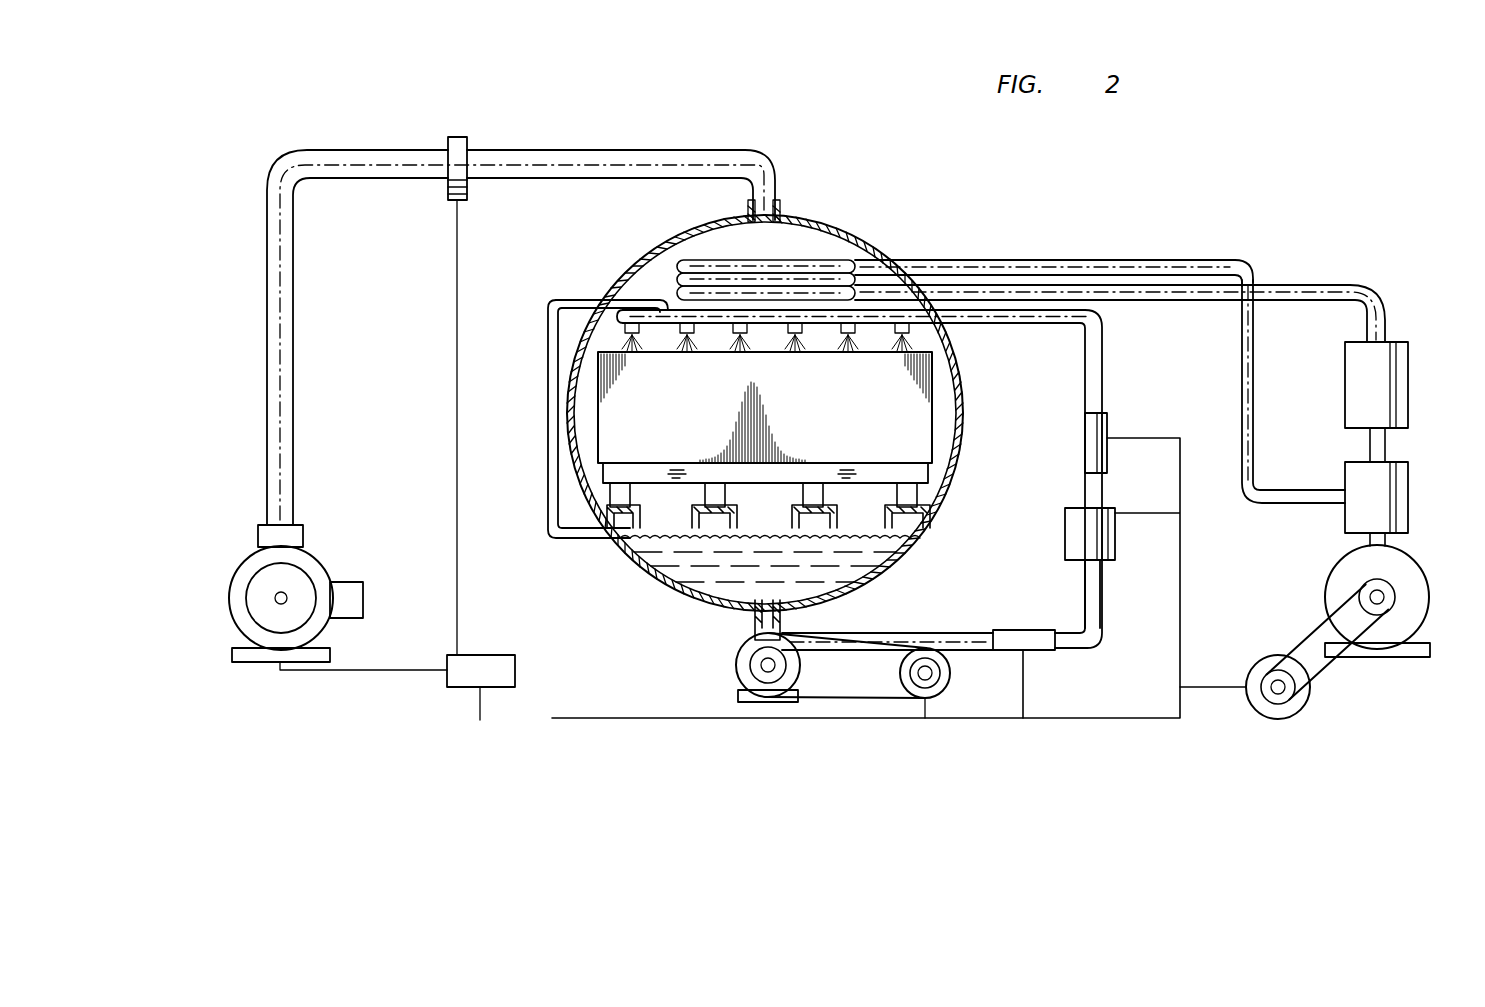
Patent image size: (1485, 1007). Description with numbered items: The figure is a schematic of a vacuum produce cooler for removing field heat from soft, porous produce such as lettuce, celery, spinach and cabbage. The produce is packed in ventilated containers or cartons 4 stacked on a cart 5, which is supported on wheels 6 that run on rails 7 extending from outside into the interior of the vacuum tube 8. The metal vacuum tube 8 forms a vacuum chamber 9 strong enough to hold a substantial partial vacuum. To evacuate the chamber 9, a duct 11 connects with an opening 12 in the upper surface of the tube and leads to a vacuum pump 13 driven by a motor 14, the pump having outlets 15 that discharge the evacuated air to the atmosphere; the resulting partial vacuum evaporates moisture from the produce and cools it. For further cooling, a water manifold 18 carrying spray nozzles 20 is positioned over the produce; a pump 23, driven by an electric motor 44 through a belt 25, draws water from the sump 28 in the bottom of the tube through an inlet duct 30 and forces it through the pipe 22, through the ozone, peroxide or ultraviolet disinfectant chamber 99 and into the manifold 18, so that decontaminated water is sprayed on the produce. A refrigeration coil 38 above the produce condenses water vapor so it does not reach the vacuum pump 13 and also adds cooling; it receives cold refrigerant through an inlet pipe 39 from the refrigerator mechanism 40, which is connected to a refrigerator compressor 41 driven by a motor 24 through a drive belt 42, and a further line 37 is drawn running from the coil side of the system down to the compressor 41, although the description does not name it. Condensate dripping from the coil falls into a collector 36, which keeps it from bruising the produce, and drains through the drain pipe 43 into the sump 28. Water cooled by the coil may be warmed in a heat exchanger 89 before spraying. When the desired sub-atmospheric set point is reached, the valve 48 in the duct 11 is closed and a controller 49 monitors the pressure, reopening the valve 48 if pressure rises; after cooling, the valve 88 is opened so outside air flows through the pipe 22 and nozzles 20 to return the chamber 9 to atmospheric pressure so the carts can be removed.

The containers or cartons 4 is at (925, 425).
The cart 5 is at (678, 468).
The wheels 6 is at (632, 495).
The rails 7 is at (640, 525).
The vacuum tube 8 is at (575, 408).
The vacuum chamber 9 is at (950, 445).
The duct 11 is at (285, 262).
The opening 12 is at (778, 205).
The vacuum pump 13 is at (258, 562).
The motor 14 is at (265, 612).
The outlets 15 is at (360, 600).
The water manifold 18 is at (567, 298).
The spray nozzles 20 is at (655, 300).
The pipe 22 is at (1088, 598).
The pump 23 is at (745, 668).
The motor 24 is at (1295, 702).
The belt 25 is at (870, 700).
The sump 28 is at (862, 570).
The inlet duct 30 is at (755, 620).
The collector 36 is at (657, 320).
The pipe 37 is at (1245, 365).
The refrigeration coil 38 is at (835, 265).
The inlet pipe 39 is at (1340, 290).
The refrigerator mechanism 40 is at (1385, 375).
The refrigerator compressor 41 is at (1385, 503).
The drive belt 42 is at (1312, 630).
The drain pipe 43 is at (548, 355).
The electric motor 44 is at (948, 688).
The valve 48 is at (470, 145).
The controller 49 is at (515, 662).
The valve 88 is at (1108, 430).
The heat exchanger 89 is at (1112, 540).
The disinfectant chamber 99 is at (1008, 630).